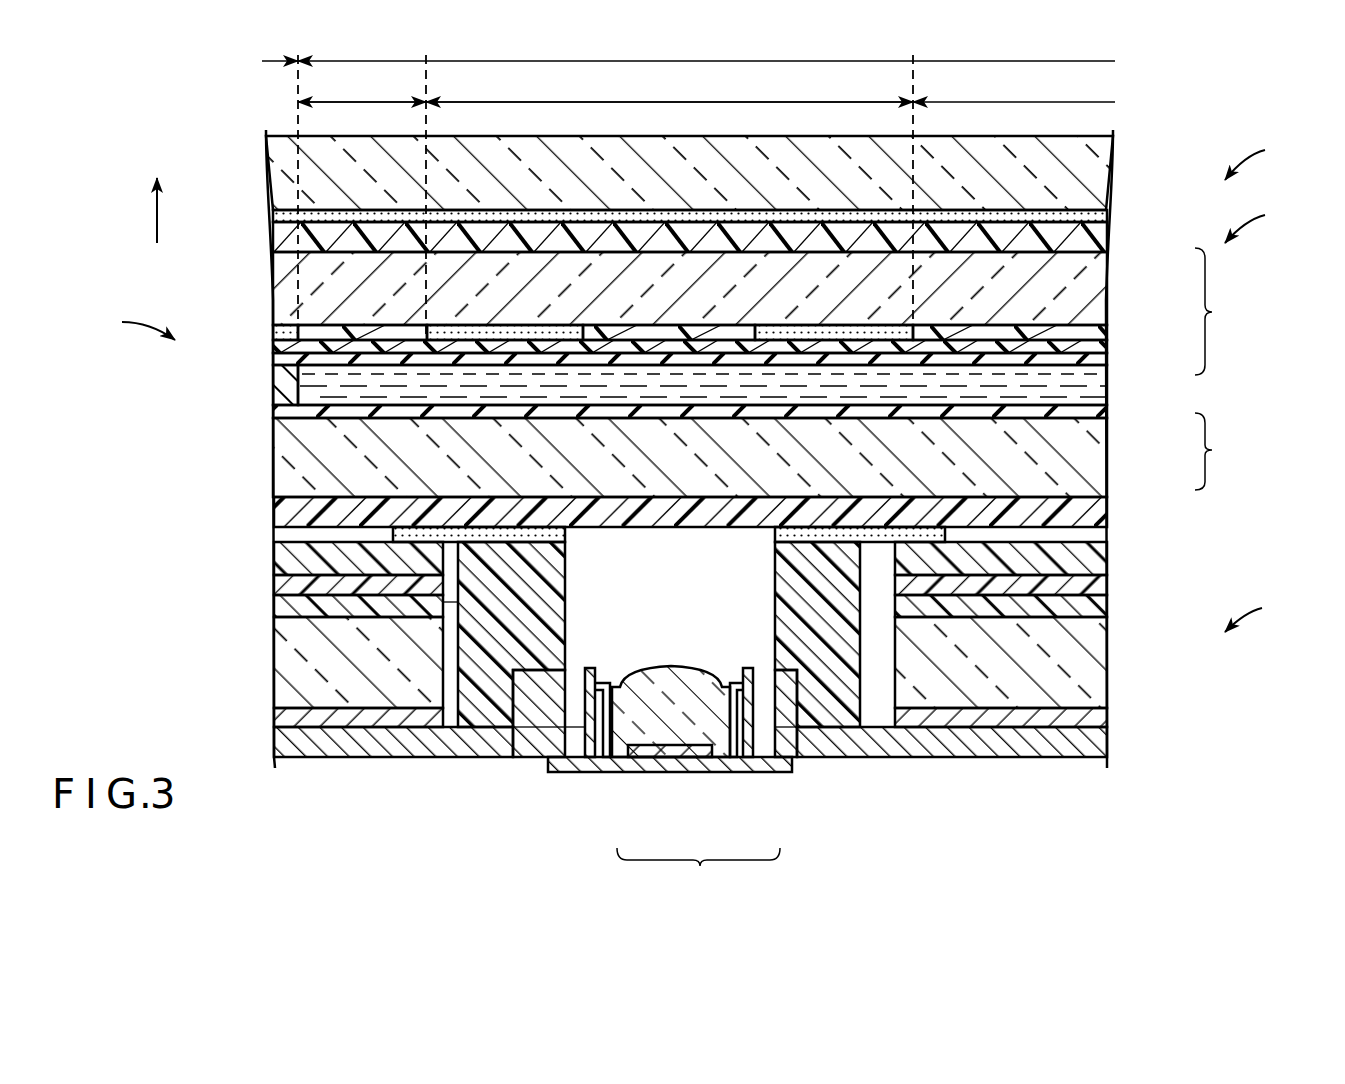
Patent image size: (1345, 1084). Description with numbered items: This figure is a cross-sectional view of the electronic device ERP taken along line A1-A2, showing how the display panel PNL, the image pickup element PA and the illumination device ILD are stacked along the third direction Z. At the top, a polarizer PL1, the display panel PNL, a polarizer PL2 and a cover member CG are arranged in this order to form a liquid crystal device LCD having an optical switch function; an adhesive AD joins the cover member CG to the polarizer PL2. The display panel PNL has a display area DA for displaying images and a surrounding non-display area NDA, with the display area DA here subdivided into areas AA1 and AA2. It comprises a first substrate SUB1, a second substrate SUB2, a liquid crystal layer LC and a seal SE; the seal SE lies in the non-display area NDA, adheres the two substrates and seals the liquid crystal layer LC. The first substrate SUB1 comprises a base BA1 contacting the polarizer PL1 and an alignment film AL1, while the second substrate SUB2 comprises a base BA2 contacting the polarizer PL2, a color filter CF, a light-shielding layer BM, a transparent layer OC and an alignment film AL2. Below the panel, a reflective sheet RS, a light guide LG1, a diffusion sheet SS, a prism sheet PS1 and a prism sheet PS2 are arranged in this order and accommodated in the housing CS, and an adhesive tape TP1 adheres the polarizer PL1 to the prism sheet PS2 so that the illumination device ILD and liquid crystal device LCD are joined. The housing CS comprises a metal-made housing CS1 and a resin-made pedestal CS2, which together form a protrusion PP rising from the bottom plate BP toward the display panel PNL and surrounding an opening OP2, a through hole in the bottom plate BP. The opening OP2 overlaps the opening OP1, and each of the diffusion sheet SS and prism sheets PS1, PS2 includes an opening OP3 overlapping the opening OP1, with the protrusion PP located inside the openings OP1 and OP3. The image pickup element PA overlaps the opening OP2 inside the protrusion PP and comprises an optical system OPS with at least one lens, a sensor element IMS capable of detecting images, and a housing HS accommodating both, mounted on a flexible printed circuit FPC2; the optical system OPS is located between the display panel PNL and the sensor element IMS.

The cover member CG is at (1098, 165).
The adhesive layer AD is at (1098, 213).
The polarizer PL2 is at (1098, 237).
The base BA2 is at (1090, 268).
The color filter CF is at (1045, 330).
The light-shielding layer BM is at (488, 329).
The transparent layer OC is at (1098, 346).
The alignment film AL2 is at (1098, 358).
The seal SE is at (283, 387).
The liquid crystal layer LC is at (1095, 392).
The alignment film AL1 is at (1098, 412).
The base BA1 is at (1095, 462).
The polarizer PL1 is at (1095, 512).
The adhesive tape TP1 is at (940, 535).
The prism sheet PS2 is at (1098, 560).
The prism sheet PS1 is at (1098, 585).
The diffusion sheet SS is at (1098, 605).
The light guide LG1 is at (1095, 660).
The reflective sheet RS is at (1095, 718).
The housing CS is at (1112, 742).
The metal-made housing CS1 is at (808, 747).
The resin-made pedestal CS2 is at (840, 710).
The bottom plate BP is at (355, 745).
The protrusion PP is at (568, 640).
The opening OP1 is at (452, 636).
The opening OP2 is at (575, 742).
The opening OP3 is at (452, 583).
The second flexible printed circuit FPC2 is at (588, 766).
The optical system OPS is at (660, 730).
The sensor element IMS is at (695, 753).
The housing HS is at (748, 745).
The image pickup element PA is at (698, 870).
The first substrate SUB1 is at (1232, 451).
The second substrate SUB2 is at (1232, 311).
The electronic device ERP is at (1268, 159).
The display panel PNL is at (1268, 222).
The illumination device ILD is at (1262, 610).
The liquid crystal device LCD is at (124, 324).
The non-display area NDA is at (267, 185).
The display area DA is at (706, 47).
The first area AA1 is at (706, 196).
The second area AA2 is at (669, 196).
The line A1-A2 end point A1 is at (277, 781).
The line A1-A2 end point A2 is at (1104, 781).
The third direction Z is at (156, 193).